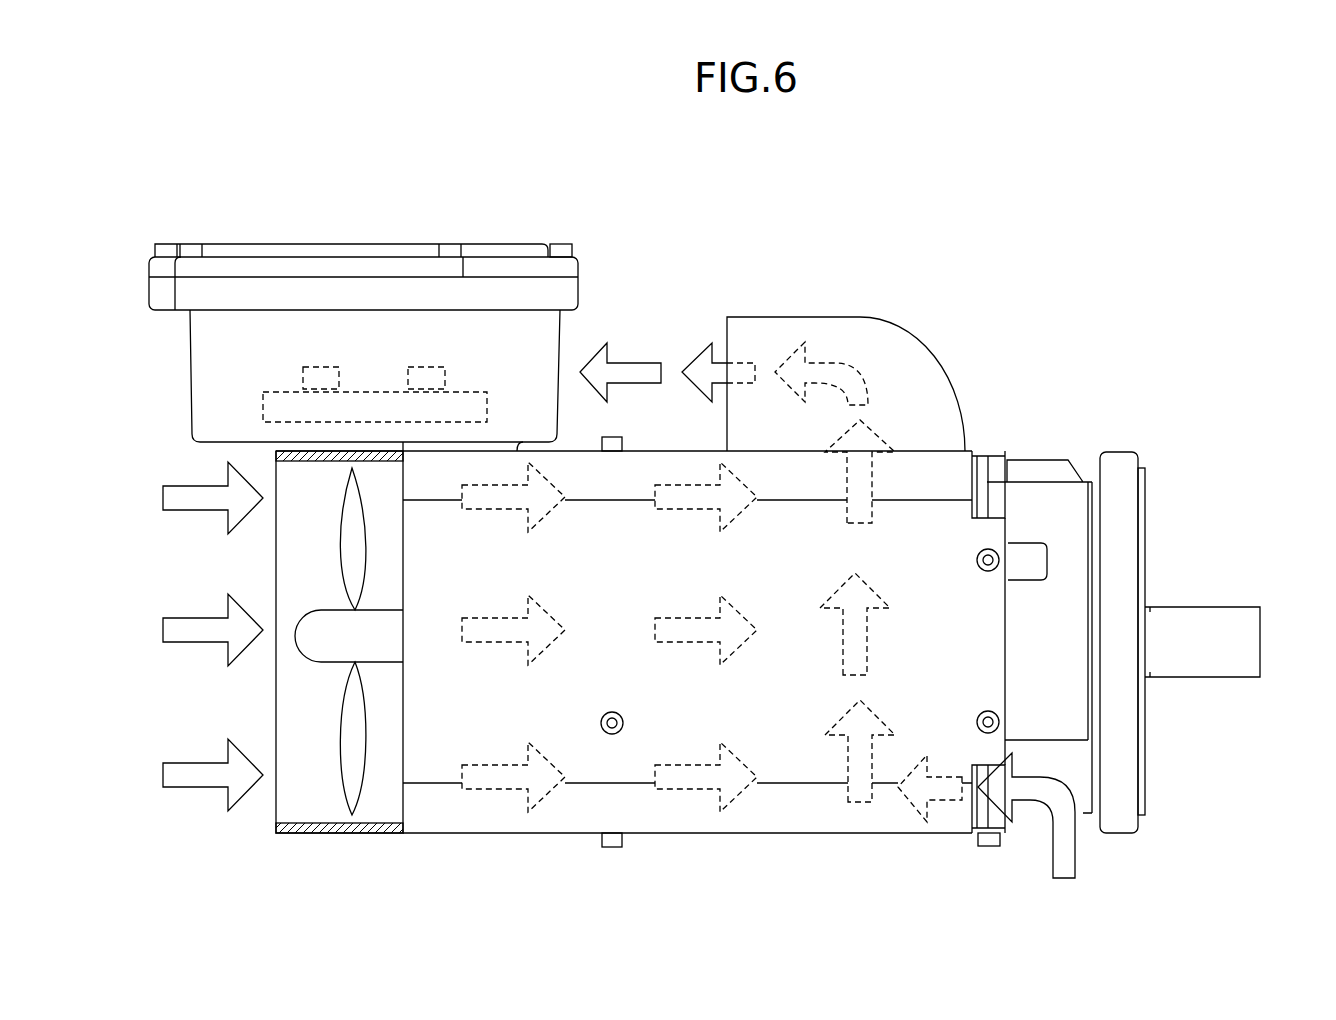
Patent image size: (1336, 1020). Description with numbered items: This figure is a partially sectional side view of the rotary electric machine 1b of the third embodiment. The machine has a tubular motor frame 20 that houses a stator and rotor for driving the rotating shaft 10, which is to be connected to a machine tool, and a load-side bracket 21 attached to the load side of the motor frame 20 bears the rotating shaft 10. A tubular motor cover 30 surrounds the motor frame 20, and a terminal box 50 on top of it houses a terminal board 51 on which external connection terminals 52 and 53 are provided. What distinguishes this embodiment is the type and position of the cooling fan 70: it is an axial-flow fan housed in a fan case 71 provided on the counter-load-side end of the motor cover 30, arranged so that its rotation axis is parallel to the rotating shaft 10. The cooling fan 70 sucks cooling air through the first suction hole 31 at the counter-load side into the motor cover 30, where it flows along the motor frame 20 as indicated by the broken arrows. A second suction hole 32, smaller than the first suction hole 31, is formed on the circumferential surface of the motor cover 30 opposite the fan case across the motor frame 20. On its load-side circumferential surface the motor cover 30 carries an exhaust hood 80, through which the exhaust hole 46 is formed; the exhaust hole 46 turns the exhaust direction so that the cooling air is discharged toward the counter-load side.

The rotary electric machine 1b is at (594, 179).
The rotating shaft 10 is at (1222, 613).
The motor frame 20 is at (1067, 585).
The load-side bracket 21 is at (1117, 458).
The motor cover 30 is at (588, 750).
The first suction hole 31 is at (256, 680).
The second suction hole 32 is at (1020, 790).
The exhaust hole 46 is at (716, 336).
The terminal box 50 is at (232, 243).
The terminal board 51 is at (263, 400).
The external connection terminal 52 is at (318, 366).
The external connection terminal 53 is at (427, 366).
The cooling fan 70 is at (318, 627).
The fan case 71 is at (335, 838).
The exhaust hood 80 is at (890, 340).